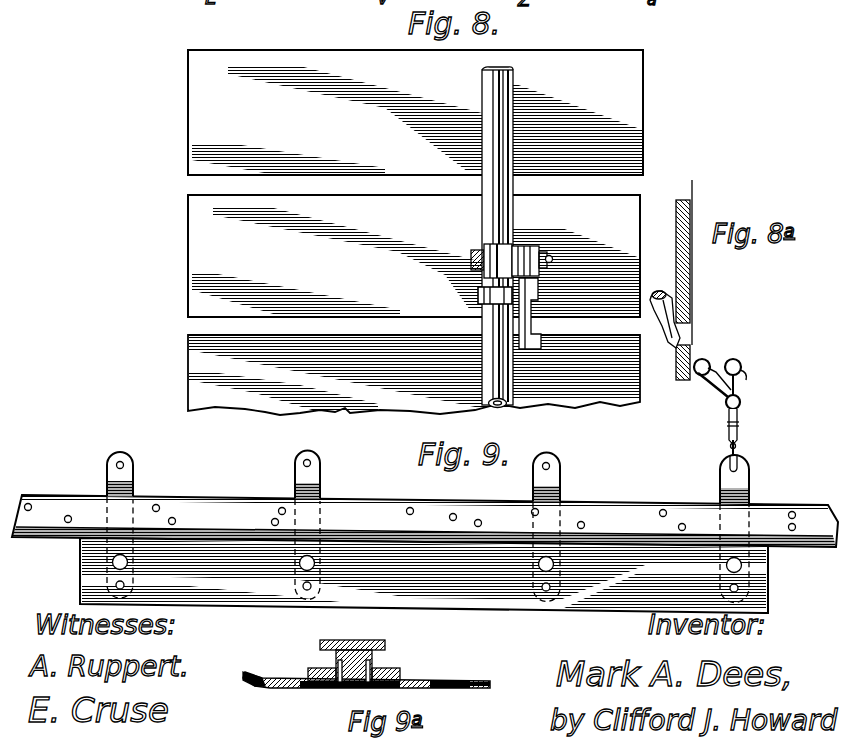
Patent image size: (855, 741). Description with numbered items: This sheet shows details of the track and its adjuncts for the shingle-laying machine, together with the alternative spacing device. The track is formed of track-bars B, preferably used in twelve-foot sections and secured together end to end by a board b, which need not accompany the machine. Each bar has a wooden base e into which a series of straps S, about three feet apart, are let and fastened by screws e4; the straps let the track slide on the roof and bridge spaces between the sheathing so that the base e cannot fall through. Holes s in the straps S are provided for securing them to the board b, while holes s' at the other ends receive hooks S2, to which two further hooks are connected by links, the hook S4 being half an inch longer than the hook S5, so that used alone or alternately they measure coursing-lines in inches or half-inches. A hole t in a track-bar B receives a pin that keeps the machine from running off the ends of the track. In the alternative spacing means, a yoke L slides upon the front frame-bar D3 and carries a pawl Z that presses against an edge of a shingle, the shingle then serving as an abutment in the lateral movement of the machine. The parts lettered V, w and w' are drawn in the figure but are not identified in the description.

In FIG. 8, the front frame-bar D3 is at (492, 86).
In FIG. 8, the yoke L is at (482, 212).
In FIG. 8, the vessel/wall panels V is at (415, 232).
In FIG. 8A, the vessel/wall panels V is at (696, 280).
In FIG. 8, the pawl Z is at (531, 318).
In FIG. 8A, the pawl Z is at (659, 319).
In FIG. 8A, the long hook S4 is at (712, 370).
In FIG. 8A, the short hook S5 is at (747, 377).
In FIG. 8A, the hook S2 is at (746, 448).
In FIG. 9, the track-bar B is at (425, 513).
In FIG. 9A, the track-bar B is at (352, 635).
In FIG. 9, the board b is at (424, 575).
In FIG. 9, the strap S is at (435, 477).
In FIG. 9A, the strap S is at (318, 688).
In FIG. 9, the hole s' is at (401, 471).
In FIG. 9A, the hole s' is at (265, 671).
In FIG. 9, the hole s is at (421, 567).
In FIG. 9A, the hole s is at (480, 669).
In FIG. 9, the hole w is at (410, 500).
In FIG. 9, the hole w' is at (430, 520).
In FIG. 9, the hole t is at (408, 508).
In FIG. 9A, the wooden base e is at (362, 665).
In FIG. 9A, the screw e4 is at (340, 690).